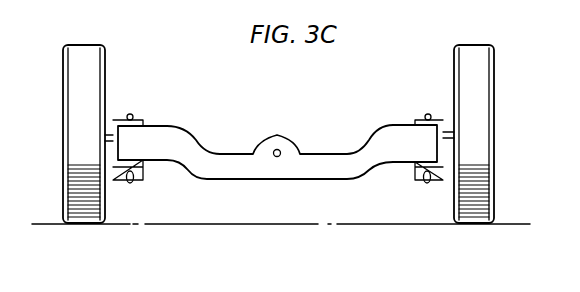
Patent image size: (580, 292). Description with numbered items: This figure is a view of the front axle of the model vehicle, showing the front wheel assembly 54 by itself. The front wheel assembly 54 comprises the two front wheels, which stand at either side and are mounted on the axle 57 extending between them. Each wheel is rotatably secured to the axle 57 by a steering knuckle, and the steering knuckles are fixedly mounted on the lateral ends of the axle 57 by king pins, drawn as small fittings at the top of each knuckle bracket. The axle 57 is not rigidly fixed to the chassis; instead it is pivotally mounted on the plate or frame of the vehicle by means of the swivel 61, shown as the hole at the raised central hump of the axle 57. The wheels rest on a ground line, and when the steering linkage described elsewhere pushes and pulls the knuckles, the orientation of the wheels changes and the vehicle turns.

The front wheel assembly 54 is at (304, 198).
The axle 57 is at (229, 171).
The swivel 61 is at (277, 149).